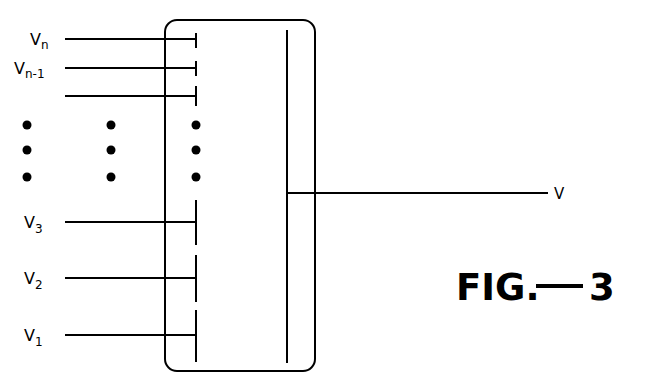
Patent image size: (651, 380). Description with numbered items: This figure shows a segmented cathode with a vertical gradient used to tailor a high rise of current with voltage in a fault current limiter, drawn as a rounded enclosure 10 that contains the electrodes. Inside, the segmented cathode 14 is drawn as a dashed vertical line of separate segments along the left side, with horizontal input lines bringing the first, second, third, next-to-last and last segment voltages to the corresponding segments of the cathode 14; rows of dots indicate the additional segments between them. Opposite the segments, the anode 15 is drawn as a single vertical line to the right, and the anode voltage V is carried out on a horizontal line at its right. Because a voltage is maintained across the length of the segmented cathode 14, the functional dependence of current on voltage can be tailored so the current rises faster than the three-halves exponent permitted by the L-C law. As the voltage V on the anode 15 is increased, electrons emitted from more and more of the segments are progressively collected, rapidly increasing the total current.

The semiconductor device / substrate 10 is at (315, 332).
The segmented cathode 14 is at (231, 358).
The anode 15 is at (287, 285).